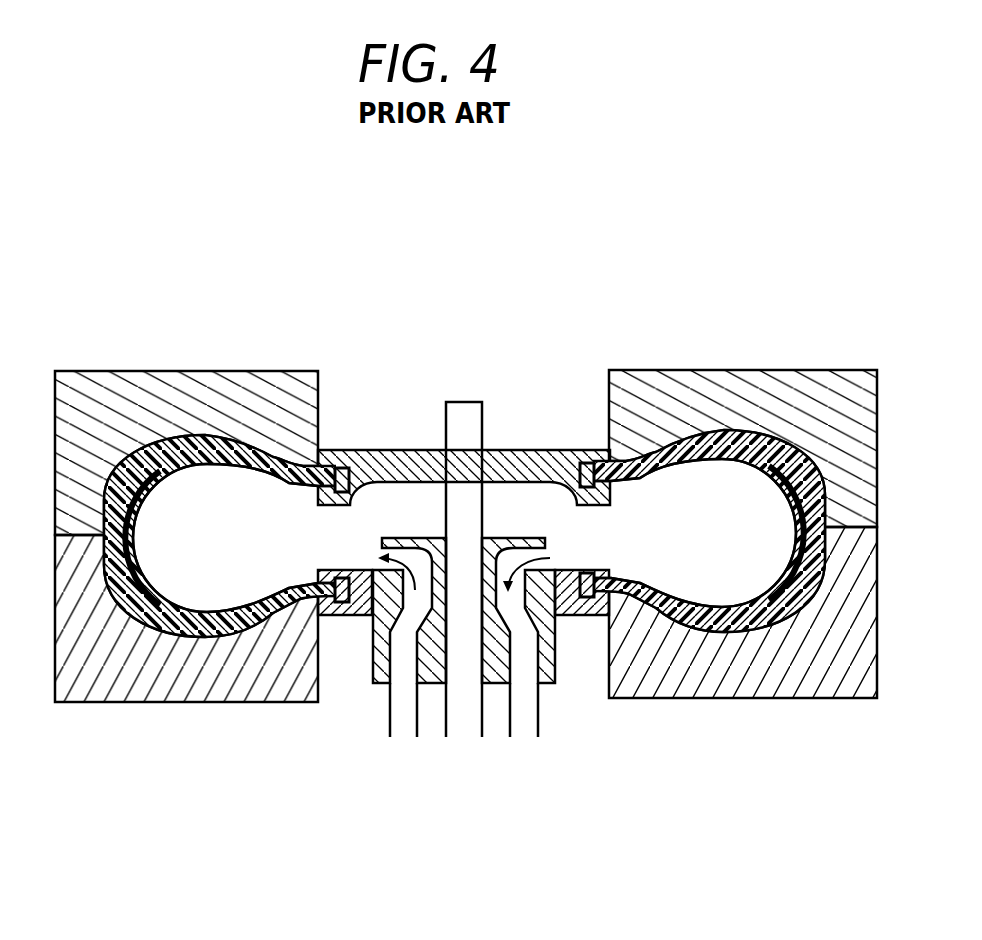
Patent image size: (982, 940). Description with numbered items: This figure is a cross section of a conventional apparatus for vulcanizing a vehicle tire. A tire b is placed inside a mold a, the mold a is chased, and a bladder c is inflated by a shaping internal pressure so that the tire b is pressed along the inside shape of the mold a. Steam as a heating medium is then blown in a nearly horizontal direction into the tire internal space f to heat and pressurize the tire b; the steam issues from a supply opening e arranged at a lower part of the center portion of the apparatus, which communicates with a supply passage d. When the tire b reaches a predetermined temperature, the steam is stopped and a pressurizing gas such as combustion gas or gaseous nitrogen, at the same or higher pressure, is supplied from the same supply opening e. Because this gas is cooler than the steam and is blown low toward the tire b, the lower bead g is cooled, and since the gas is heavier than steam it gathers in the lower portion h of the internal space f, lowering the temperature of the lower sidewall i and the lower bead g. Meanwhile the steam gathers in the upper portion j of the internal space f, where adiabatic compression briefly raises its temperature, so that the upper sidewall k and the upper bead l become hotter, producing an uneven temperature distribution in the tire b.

The mold a is at (655, 366).
The tire b is at (694, 430).
The bladder c is at (610, 452).
The supply passage d is at (397, 640).
The supply opening e is at (367, 545).
The tire internal space f is at (212, 558).
The lower bead g is at (290, 614).
The lower portion h is at (200, 583).
The lower sidewall i is at (224, 633).
The upper portion j is at (167, 502).
The upper sidewall k is at (223, 545).
The upper bead l is at (274, 442).